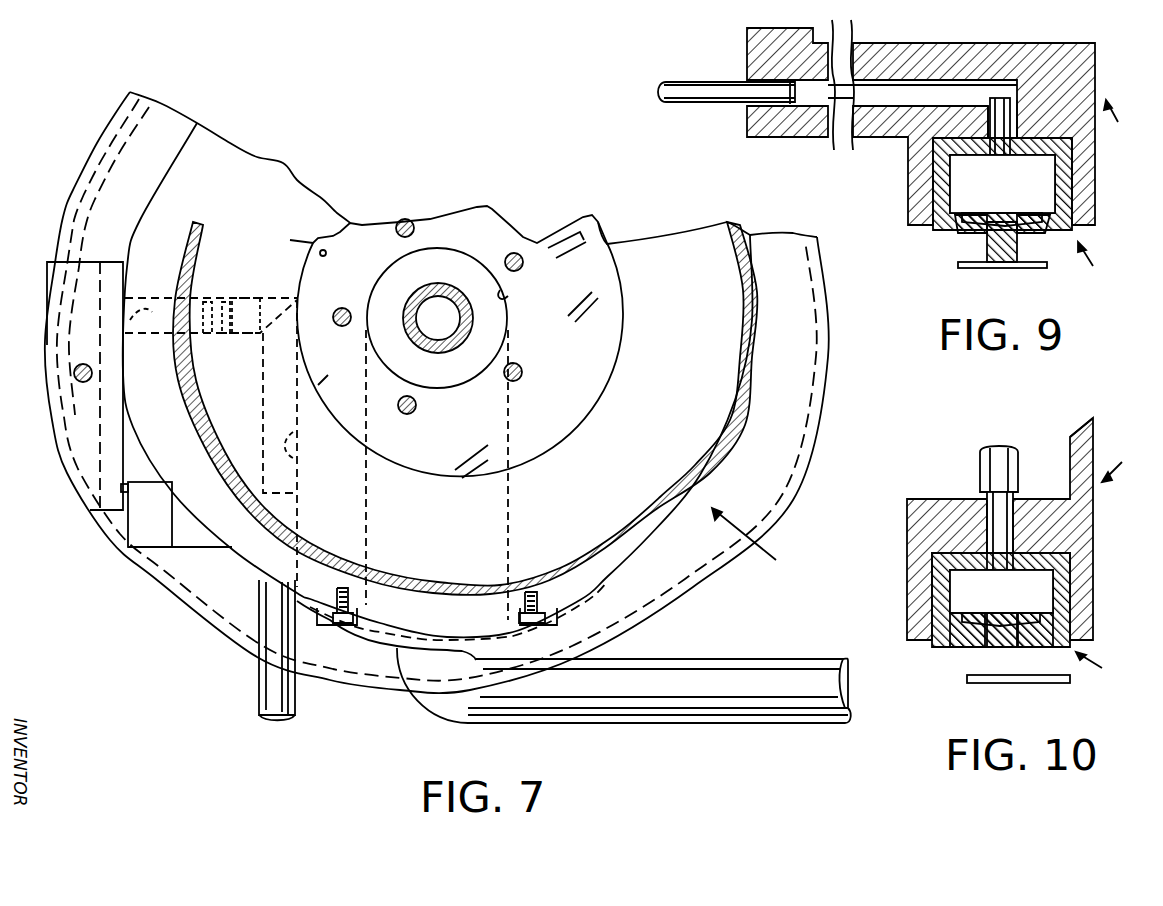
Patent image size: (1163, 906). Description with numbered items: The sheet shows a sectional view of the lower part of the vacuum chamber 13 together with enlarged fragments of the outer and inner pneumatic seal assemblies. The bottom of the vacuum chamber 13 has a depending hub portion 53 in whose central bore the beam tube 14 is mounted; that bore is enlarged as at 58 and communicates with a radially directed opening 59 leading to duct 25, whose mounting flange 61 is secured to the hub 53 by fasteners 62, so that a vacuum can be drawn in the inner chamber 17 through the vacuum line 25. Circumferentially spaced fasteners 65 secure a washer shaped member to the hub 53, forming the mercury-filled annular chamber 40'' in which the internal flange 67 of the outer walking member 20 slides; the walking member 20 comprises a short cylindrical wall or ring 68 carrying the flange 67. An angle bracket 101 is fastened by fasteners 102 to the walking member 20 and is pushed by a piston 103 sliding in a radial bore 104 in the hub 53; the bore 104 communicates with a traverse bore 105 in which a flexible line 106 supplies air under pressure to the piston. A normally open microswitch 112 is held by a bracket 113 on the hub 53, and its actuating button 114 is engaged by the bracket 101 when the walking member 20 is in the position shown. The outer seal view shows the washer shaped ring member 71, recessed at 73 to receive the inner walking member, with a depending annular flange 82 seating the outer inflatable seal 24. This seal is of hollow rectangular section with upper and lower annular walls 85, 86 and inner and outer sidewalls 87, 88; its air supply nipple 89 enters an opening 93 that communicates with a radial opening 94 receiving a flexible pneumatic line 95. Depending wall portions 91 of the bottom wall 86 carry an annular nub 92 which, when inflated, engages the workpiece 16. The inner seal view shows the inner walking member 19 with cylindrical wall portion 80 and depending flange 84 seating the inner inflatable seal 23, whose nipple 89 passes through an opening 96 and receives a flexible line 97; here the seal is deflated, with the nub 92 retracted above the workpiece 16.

In FIG. 7, the vacuum chamber 13 is at (118, 127).
In FIG. 7, the hub portion 53 is at (166, 198).
In FIG. 7, the cylindrical wall or ring 68 is at (652, 522).
In FIG. 7, the internal flange 67 is at (658, 242).
In FIG. 7, the annular chamber or cavity 40'' is at (479, 342).
In FIG. 7, the beam tube 14 is at (460, 296).
In FIG. 7, the inner chamber 17 is at (470, 360).
In FIG. 7, the enlarged portion of central bore 58 is at (496, 300).
In FIG. 7, the fasteners 65 is at (348, 310).
In FIG. 7, the angle bracket 101 is at (72, 312).
In FIG. 7, the fasteners 102 is at (76, 383).
In FIG. 7, the piston 103 is at (125, 300).
In FIG. 7, the bore 104 is at (153, 335).
In FIG. 7, the traverse bore 105 is at (298, 462).
In FIG. 7, the actuating button 114 is at (121, 488).
In FIG. 7, the microswitch 112 is at (138, 528).
In FIG. 7, the bracket 113 is at (183, 535).
In FIG. 7, the flexible line 106 is at (258, 692).
In FIG. 7, the radially directed opening 59 is at (366, 528).
In FIG. 7, the fasteners 62 is at (340, 632).
In FIG. 7, the mounting flange 61 is at (392, 636).
In FIG. 7, the duct (vacuum line) 25 is at (742, 662).
In FIG. 7, the outer walking member 20 is at (755, 546).
In FIG. 9, the outer walking member 20 is at (1122, 122).
In FIG. 9, the depending annular flange 82 is at (908, 182).
In FIG. 9, the recess 73 is at (850, 79).
In FIG. 9, the washer shaped ring member 71 is at (853, 150).
In FIG. 9, the flexible pneumatic line 95 is at (718, 80).
In FIG. 9, the opening 94 is at (926, 104).
In FIG. 9, the opening 93 is at (990, 120).
In FIG. 9, the air supply nipple 89 is at (1012, 118).
In FIG. 10, the air supply nipple 89 is at (1014, 526).
In FIG. 9, the upper annular wall 85 is at (1050, 146).
In FIG. 10, the upper annular wall 85 is at (952, 556).
In FIG. 9, the outer sidewall 88 is at (946, 204).
In FIG. 10, the outer sidewall 88 is at (953, 616).
In FIG. 9, the lower annular wall 86 is at (994, 214).
In FIG. 10, the lower annular wall 86 is at (1000, 606).
In FIG. 9, the inner sidewall 87 is at (1072, 150).
In FIG. 10, the inner sidewall 87 is at (1072, 600).
In FIG. 9, the depending wall portions 91 is at (962, 236).
In FIG. 10, the depending wall portions 91 is at (980, 636).
In FIG. 9, the depending annular nub portion 92 is at (1003, 262).
In FIG. 10, the depending annular nub portion 92 is at (1006, 648).
In FIG. 9, the workpiece 16 is at (980, 268).
In FIG. 10, the workpiece 16 is at (1028, 683).
In FIG. 9, the outer inflatable seal 24 is at (1097, 268).
In FIG. 10, the depending annular flange 84 is at (1093, 532).
In FIG. 10, the cylindrical wall portion 80 is at (1093, 444).
In FIG. 10, the inner walking member 19 is at (1121, 459).
In FIG. 10, the flexible line 97 is at (980, 468).
In FIG. 10, the opening 96 is at (988, 520).
In FIG. 10, the inner inflatable seal 23 is at (1101, 668).